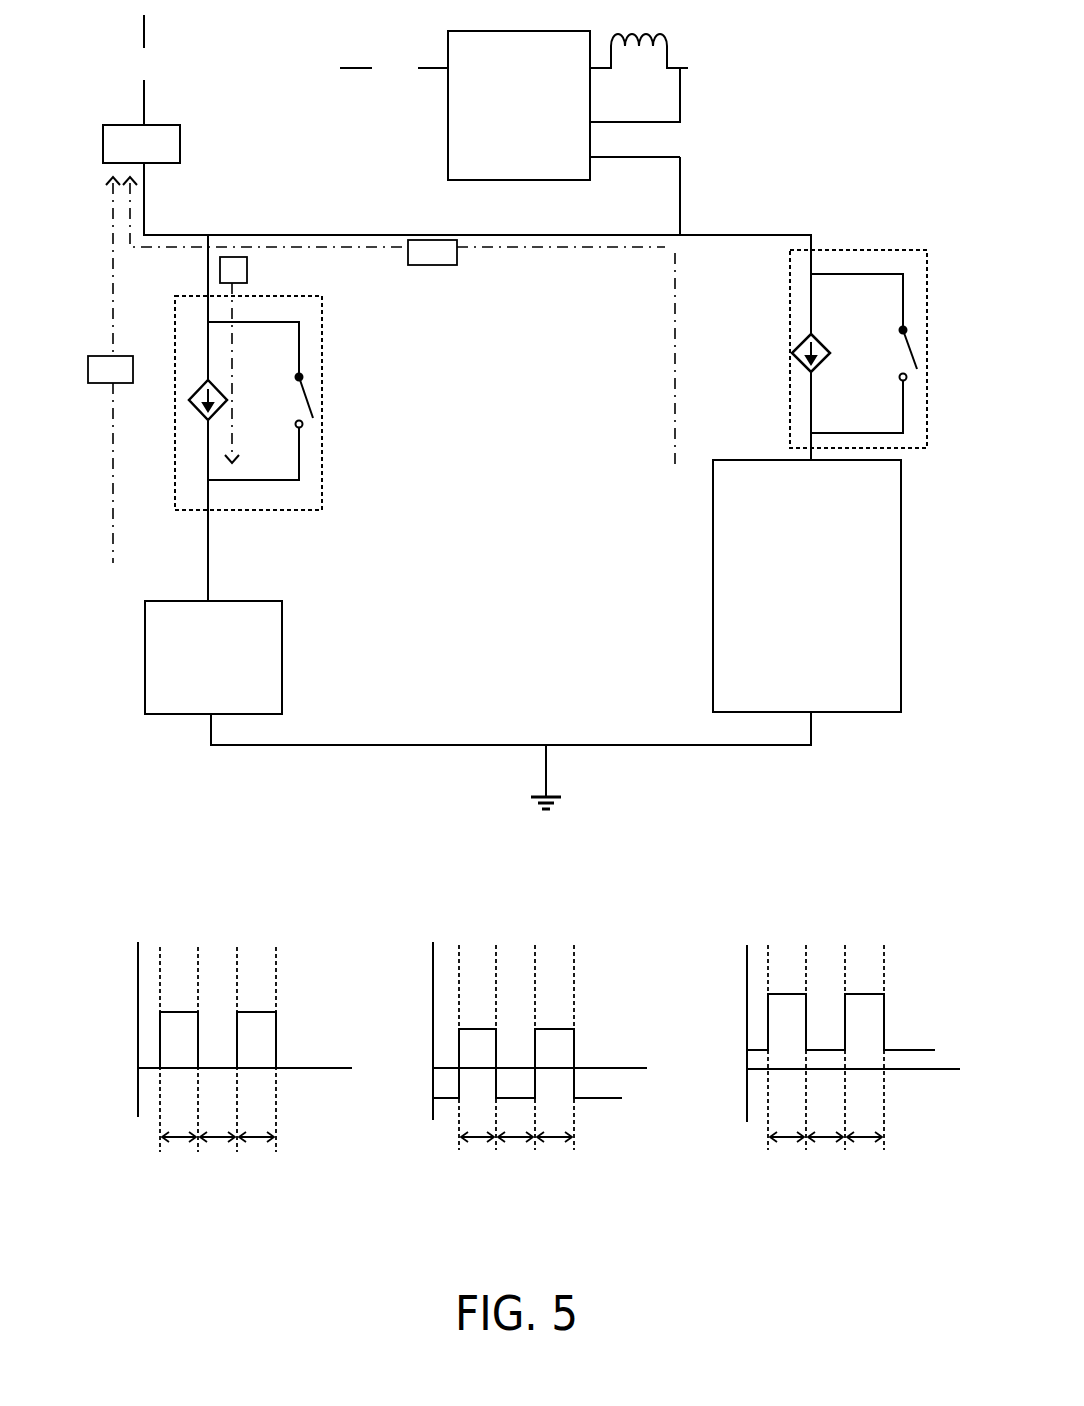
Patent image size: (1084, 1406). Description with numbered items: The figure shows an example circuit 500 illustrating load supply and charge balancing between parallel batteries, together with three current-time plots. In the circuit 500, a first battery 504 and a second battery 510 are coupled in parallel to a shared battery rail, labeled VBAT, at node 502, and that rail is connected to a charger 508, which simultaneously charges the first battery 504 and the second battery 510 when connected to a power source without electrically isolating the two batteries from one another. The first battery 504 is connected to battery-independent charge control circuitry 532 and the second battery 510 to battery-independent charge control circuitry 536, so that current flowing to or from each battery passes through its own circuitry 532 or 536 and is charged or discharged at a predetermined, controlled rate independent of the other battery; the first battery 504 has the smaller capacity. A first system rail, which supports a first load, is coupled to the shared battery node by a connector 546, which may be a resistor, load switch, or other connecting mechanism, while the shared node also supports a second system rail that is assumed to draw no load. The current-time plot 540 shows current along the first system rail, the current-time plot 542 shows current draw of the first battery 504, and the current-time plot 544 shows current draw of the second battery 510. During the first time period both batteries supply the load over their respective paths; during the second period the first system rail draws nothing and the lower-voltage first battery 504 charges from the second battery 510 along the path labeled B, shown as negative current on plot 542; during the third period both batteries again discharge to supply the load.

The circuit 500 is at (763, 129).
The VBAT node 502 is at (680, 235).
The first battery 504 is at (232, 683).
The charger 508 is at (538, 117).
The second battery 510 is at (826, 610).
The battery-independent charge control circuitry 532 is at (322, 354).
The battery-independent charge control circuitry 536 is at (790, 304).
The current-time plot 540 is at (233, 937).
The current-time plot 542 is at (527, 937).
The current-time plot 544 is at (839, 937).
The connector 546 is at (160, 155).